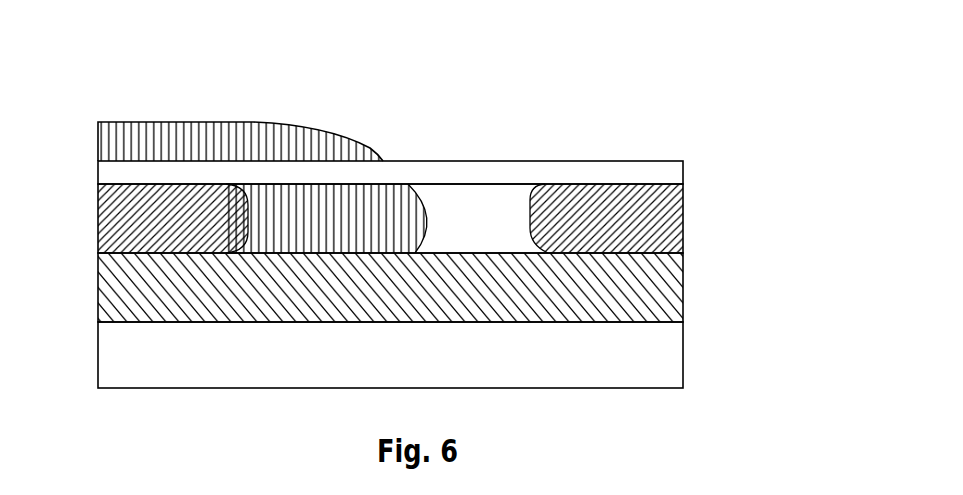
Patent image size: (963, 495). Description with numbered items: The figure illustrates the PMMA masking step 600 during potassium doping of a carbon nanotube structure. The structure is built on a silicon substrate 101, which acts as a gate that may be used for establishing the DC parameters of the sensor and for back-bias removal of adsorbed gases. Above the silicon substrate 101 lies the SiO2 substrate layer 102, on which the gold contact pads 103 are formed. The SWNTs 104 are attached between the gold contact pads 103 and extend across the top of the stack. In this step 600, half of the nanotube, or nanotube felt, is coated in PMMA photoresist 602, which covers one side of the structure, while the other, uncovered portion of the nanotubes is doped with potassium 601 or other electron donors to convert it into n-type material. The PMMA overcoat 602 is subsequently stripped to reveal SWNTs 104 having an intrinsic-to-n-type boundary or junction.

The potassium doping step 600 is at (626, 50).
The potassium doping 601 is at (560, 136).
The PMMA photoresist 602 is at (99, 148).
The silicon substrate 101 is at (397, 364).
The SiO2 substrate layer 102 is at (679, 297).
The gold contact pads 103 is at (99, 234).
The SWNT 104 is at (684, 163).